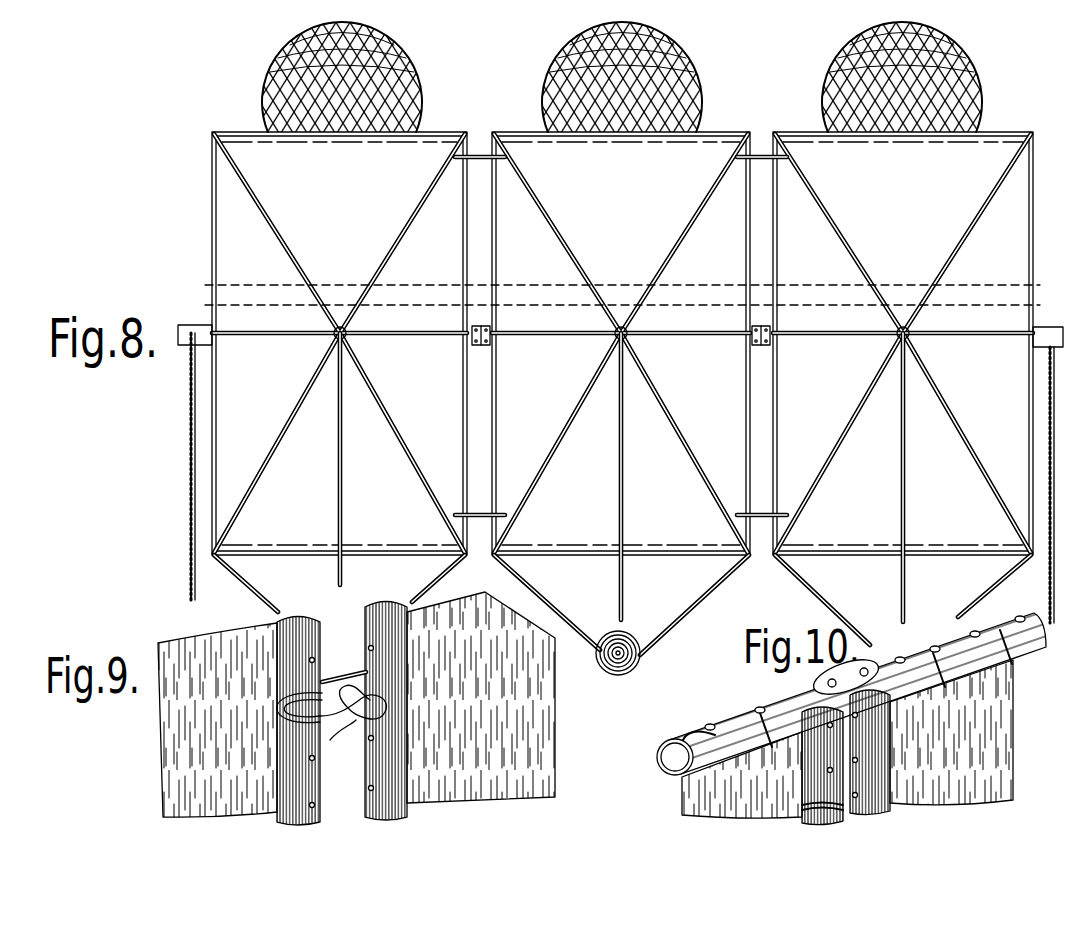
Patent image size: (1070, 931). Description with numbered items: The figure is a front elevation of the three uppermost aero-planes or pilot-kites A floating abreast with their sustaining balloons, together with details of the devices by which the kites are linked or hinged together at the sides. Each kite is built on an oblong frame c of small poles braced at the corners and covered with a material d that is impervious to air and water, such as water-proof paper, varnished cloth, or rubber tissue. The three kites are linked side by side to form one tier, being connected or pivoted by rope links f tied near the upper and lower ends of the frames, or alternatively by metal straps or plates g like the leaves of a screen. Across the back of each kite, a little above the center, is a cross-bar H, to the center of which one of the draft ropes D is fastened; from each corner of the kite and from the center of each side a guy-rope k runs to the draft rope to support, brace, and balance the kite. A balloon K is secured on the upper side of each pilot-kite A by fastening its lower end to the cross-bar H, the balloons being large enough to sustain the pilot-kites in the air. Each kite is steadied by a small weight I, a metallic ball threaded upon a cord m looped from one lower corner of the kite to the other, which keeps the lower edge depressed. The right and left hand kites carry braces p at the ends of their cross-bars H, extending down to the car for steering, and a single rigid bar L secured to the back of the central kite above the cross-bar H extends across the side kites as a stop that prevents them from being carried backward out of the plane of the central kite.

In FIG. 8, the pilot-kite A is at (519, 112).
In FIG. 8, the covering material d is at (622, 343).
In FIG. 9, the covering material d is at (356, 704).
In FIG. 10, the covering material d is at (718, 728).
In FIG. 8, the balloon K is at (288, 60).
In FIG. 8, the guy-rope k is at (308, 220).
In FIG. 8, the draft rope D is at (343, 474).
In FIG. 8, the rigid bar L is at (208, 296).
In FIG. 8, the rope link f is at (478, 150).
In FIG. 9, the rope link f is at (343, 675).
In FIG. 8, the metal strap or plate g is at (621, 347).
In FIG. 10, the metal strap or plate g is at (811, 678).
In FIG. 8, the cross-bar H is at (176, 346).
In FIG. 8, the brace rope p is at (189, 460).
In FIG. 8, the cord m is at (244, 584).
In FIG. 8, the weight I is at (612, 670).
In FIG. 9, the frame c is at (302, 620).
In FIG. 10, the frame c is at (812, 756).